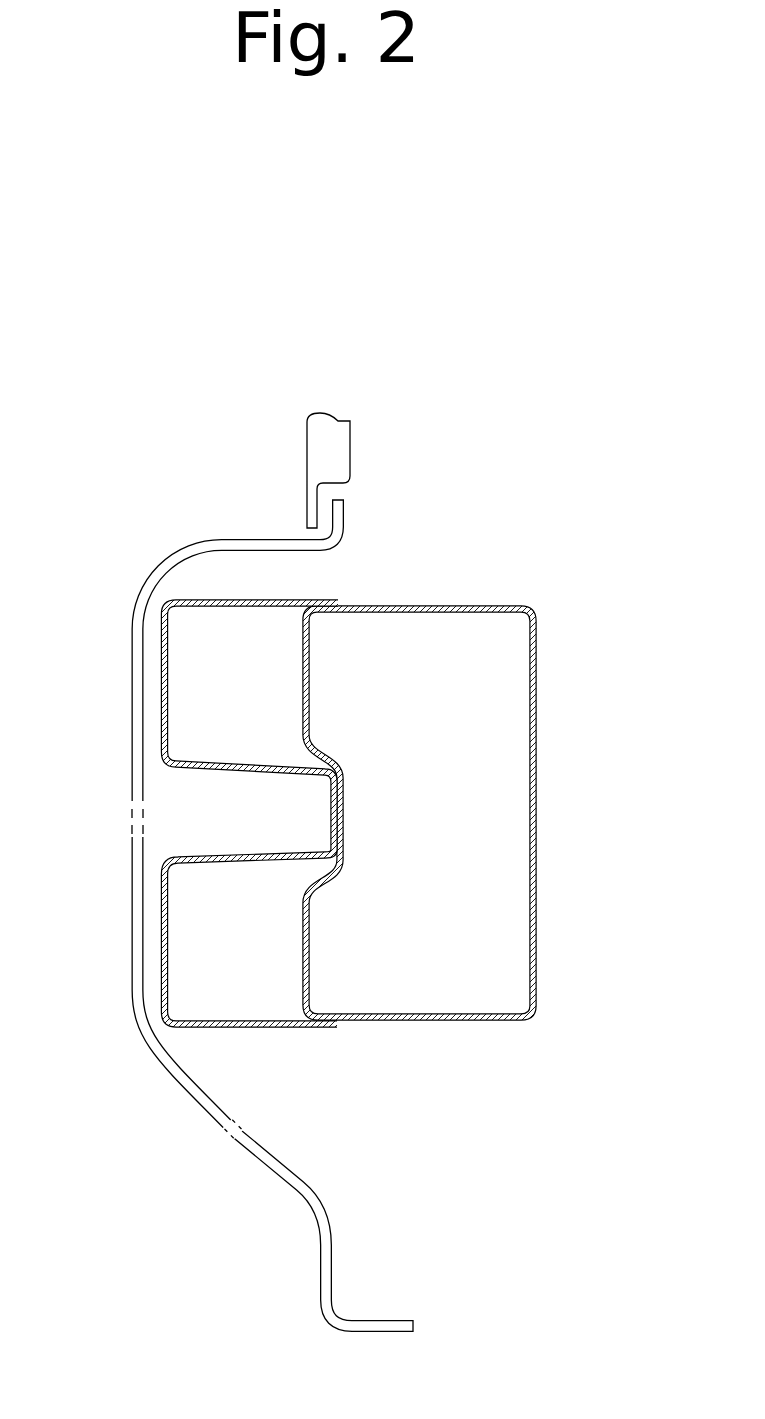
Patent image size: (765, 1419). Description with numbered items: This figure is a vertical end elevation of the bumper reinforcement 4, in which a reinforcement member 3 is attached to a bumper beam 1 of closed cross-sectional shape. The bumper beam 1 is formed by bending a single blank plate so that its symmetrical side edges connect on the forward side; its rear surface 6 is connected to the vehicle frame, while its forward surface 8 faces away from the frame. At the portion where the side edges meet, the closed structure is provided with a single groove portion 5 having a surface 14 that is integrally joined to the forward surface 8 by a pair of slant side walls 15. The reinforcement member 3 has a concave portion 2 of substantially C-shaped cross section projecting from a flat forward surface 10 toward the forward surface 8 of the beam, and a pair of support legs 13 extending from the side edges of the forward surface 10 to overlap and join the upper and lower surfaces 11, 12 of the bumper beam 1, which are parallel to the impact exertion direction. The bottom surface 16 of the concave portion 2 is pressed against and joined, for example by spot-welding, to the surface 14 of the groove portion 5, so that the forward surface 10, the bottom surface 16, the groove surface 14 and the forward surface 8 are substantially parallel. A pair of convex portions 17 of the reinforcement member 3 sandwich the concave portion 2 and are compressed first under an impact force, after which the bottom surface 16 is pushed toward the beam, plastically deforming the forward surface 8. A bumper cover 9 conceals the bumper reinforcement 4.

The bumper beam 1 is at (402, 776).
The concave portion 2 is at (193, 787).
The reinforcement member 3 is at (195, 745).
The bumper reinforcement 4 is at (329, 740).
The groove portion 5 is at (360, 800).
The rear surface 6 is at (538, 708).
The forward surface 8 is at (302, 663).
The bumper cover 9 is at (290, 1190).
The forward surface 10 is at (161, 695).
The upper surface 11 is at (480, 603).
The lower surface 12 is at (447, 1022).
The support legs 13 is at (227, 598).
The surface of the groove portion 14 is at (338, 769).
The slant side walls 15 is at (325, 750).
The bottom surface 16 is at (331, 808).
The convex portions 17 is at (189, 816).